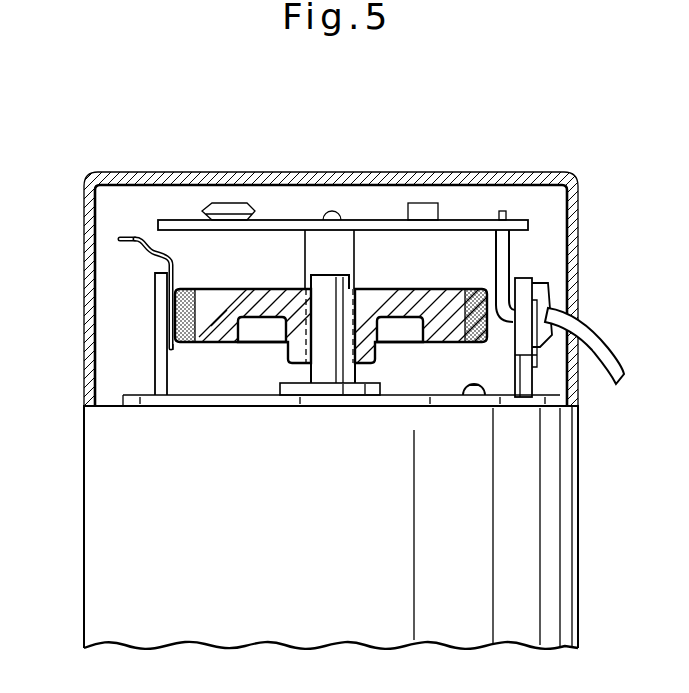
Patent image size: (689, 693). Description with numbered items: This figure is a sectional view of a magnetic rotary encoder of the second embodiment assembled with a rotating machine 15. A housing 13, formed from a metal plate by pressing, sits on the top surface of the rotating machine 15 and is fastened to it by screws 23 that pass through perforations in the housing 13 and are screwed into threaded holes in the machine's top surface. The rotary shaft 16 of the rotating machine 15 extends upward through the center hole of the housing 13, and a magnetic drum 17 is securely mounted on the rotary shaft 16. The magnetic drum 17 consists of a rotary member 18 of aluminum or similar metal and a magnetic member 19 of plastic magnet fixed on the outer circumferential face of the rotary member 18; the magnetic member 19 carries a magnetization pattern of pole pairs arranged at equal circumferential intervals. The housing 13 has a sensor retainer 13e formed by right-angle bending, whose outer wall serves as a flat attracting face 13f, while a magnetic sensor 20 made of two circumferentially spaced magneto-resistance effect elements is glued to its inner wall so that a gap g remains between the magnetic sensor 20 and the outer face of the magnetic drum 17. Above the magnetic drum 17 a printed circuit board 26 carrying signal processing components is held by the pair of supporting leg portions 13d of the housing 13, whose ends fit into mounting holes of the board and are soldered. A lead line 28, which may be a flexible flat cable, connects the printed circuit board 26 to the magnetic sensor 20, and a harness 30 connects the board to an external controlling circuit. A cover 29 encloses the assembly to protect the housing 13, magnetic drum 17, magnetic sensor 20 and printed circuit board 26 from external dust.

The cover 29 is at (579, 187).
The rotating machine 15 is at (560, 557).
The housing 13 is at (122, 395).
The supporting leg portions 13d is at (338, 257).
The sensor retainer 13e is at (156, 273).
The flat attracting face 13f is at (158, 310).
The rotary shaft 16 is at (337, 293).
The magnetic drum 17 is at (328, 234).
The rotary member 18 is at (232, 295).
The magnetic member 19 is at (185, 290).
The magnetic sensor 20 is at (158, 338).
The gap g is at (173, 343).
The screws 23 is at (471, 386).
The printed circuit board 26 is at (467, 222).
The lead line 28 is at (133, 236).
The harness 30 is at (588, 352).